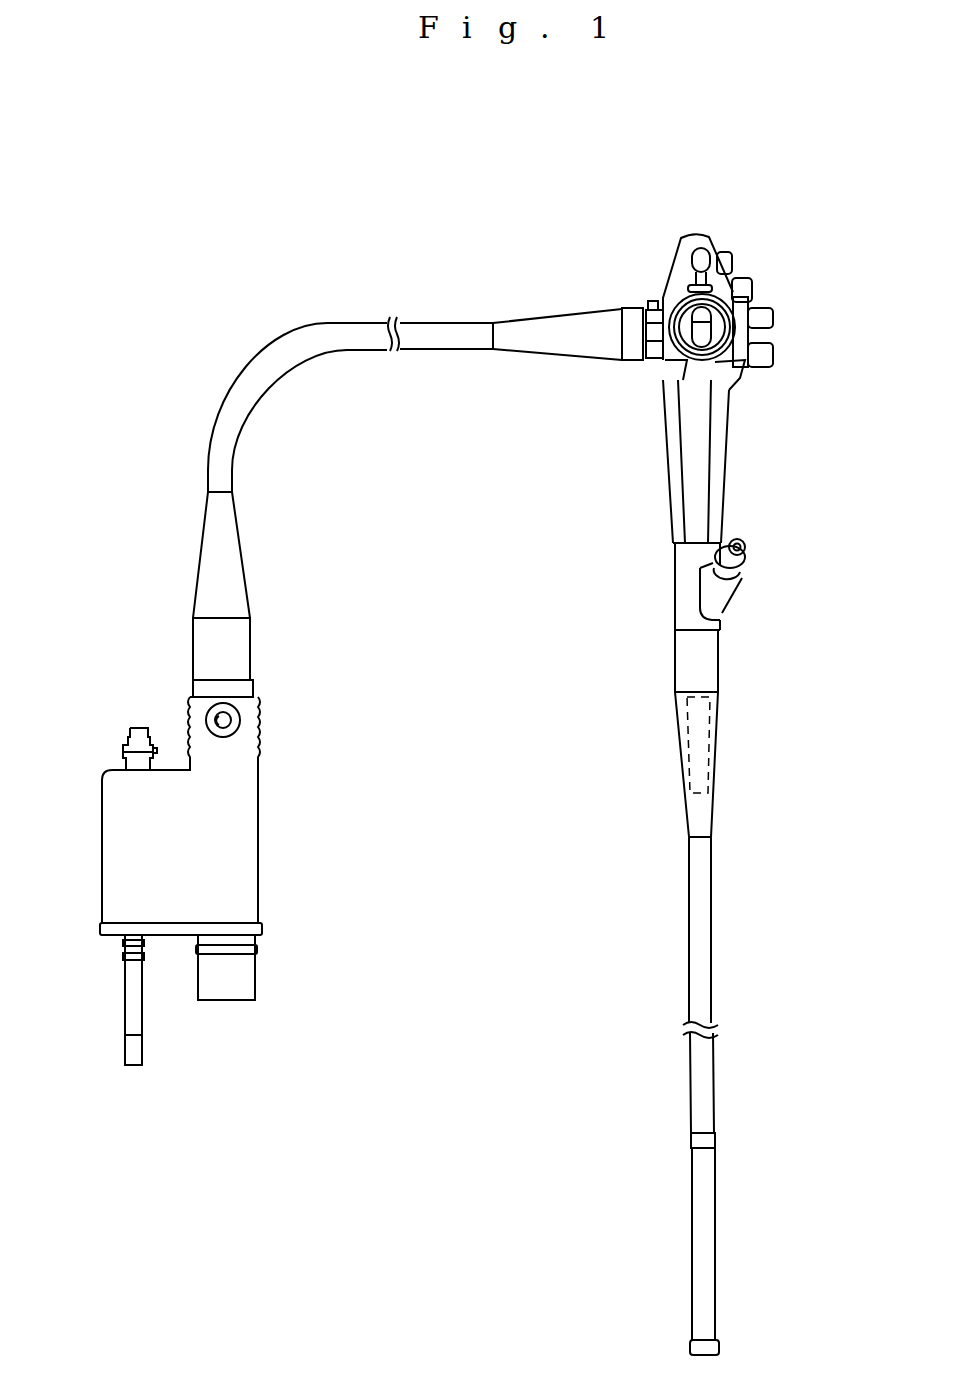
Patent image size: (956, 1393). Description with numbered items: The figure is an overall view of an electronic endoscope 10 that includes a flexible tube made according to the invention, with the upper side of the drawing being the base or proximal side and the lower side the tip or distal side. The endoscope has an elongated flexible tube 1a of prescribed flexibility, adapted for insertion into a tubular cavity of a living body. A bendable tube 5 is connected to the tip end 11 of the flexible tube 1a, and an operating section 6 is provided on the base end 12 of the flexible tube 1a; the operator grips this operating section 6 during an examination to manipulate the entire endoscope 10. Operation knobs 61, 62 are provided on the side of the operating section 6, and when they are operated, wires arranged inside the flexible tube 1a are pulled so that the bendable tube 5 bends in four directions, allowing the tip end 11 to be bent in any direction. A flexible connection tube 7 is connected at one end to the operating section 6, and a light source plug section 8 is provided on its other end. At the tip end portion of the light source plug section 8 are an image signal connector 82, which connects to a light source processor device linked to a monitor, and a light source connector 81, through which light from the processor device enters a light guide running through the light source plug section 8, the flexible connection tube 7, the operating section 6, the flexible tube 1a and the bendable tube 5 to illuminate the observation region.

The electronic endoscope 10 is at (516, 264).
The flexible connection tube 7 is at (354, 342).
The light source plug section 8 is at (220, 827).
The light source connector 81 is at (140, 1007).
The image signal connector 82 is at (247, 967).
The operation knob 62 is at (747, 287).
The operation knob 61 is at (747, 335).
The operating section 6 is at (705, 485).
The base end 12 is at (700, 715).
The flexible tube 1a is at (707, 1000).
The tip end 11 is at (703, 1123).
The bendable tube 5 is at (712, 1237).